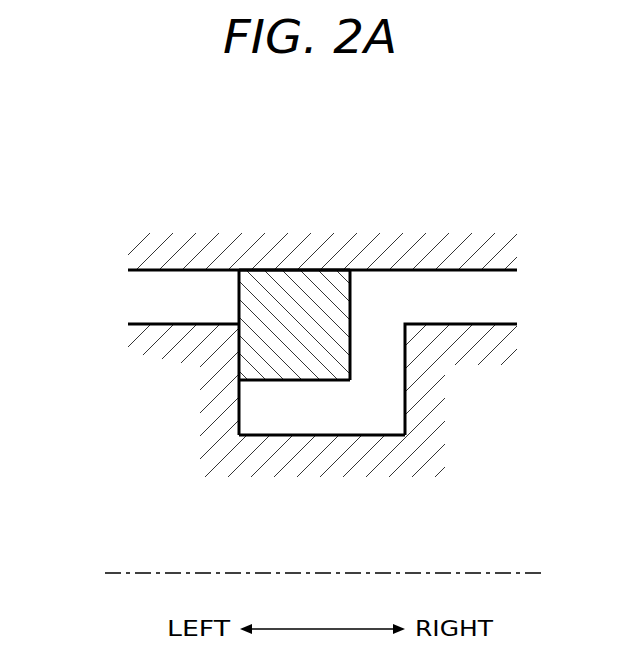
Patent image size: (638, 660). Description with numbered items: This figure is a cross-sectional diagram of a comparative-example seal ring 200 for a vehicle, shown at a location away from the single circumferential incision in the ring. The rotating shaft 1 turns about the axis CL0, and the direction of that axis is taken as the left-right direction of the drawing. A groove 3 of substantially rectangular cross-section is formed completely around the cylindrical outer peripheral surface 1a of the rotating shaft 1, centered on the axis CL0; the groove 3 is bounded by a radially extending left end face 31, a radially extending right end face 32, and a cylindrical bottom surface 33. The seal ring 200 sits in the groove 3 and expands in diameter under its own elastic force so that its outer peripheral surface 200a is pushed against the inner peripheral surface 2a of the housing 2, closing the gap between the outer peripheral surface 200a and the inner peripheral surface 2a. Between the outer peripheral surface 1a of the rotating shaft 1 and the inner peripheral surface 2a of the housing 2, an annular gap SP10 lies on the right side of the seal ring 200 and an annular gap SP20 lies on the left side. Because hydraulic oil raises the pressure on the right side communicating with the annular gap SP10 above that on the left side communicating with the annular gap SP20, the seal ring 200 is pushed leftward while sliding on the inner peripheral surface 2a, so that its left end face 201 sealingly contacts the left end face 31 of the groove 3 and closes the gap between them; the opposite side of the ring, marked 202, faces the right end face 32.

The rotating shaft 1 is at (155, 386).
The outer peripheral surface 1a is at (167, 324).
The housing 2 is at (157, 212).
The inner peripheral surface 2a is at (200, 270).
The groove 3 is at (386, 292).
The left end face 31 is at (241, 362).
The right end face 32 is at (405, 412).
The bottom surface 33 is at (361, 435).
The seal ring 200 is at (280, 283).
The outer peripheral surface 200a is at (322, 270).
The left end face 201 is at (239, 346).
The right side face of block member 202 is at (350, 357).
The annular gap SP10 is at (470, 285).
The annular gap SP20 is at (147, 295).
The axis CL0 is at (346, 575).